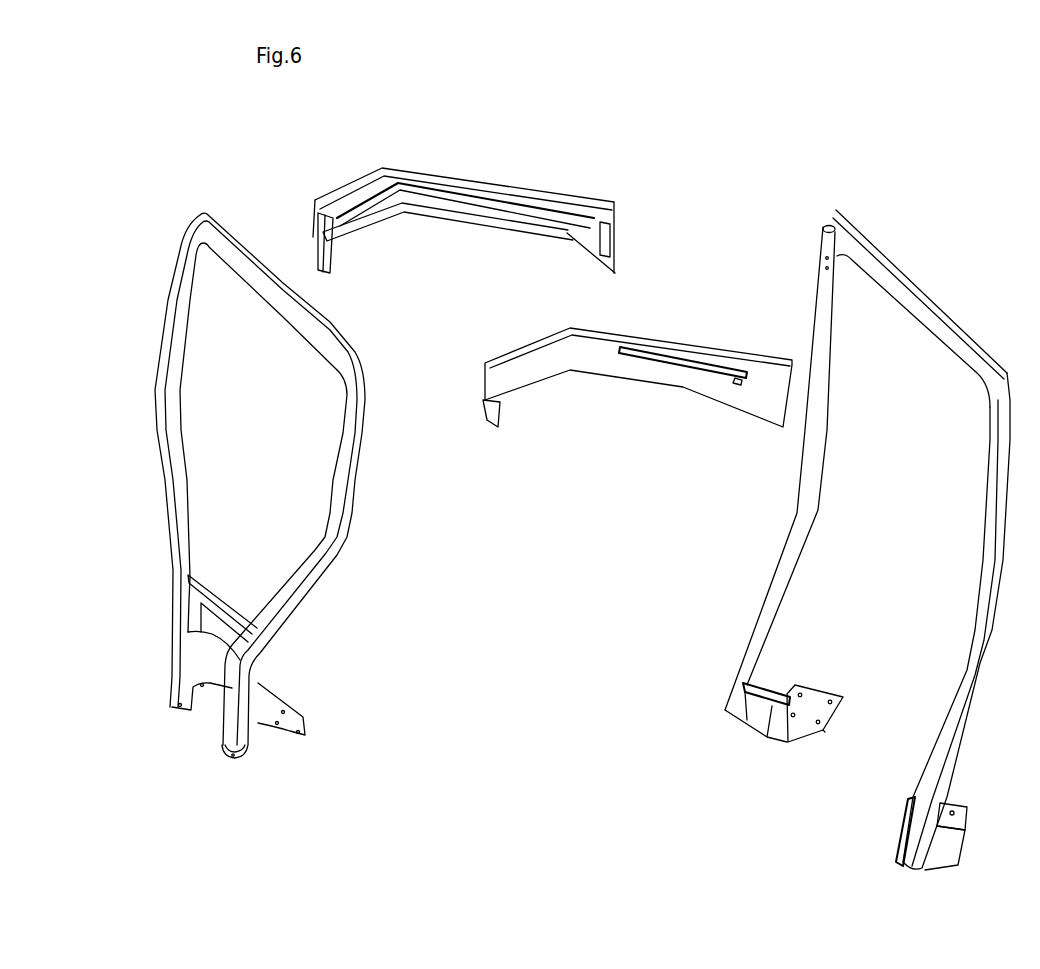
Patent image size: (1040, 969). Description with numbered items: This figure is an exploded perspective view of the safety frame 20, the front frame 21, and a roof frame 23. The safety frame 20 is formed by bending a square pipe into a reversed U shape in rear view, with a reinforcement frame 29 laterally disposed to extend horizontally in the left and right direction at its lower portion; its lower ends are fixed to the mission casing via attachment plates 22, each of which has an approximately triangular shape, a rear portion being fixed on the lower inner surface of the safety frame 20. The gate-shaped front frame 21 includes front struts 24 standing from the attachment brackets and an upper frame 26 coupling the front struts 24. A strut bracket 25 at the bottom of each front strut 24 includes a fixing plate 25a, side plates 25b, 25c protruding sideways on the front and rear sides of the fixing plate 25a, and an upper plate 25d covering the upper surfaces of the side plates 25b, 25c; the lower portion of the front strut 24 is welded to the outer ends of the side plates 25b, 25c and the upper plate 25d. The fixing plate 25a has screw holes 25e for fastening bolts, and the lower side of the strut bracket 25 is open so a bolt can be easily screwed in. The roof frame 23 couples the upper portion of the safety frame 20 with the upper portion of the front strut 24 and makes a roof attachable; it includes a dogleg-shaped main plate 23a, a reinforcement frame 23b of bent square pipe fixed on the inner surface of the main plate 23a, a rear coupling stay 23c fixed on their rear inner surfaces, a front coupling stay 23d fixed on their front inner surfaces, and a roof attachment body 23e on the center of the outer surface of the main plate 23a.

The safety frame 20 is at (343, 532).
The front frame 21 is at (803, 238).
The attachment plate 22 is at (297, 713).
The roof frame 23 is at (552, 324).
The main plate 23a is at (478, 180).
The reinforcement frame 23b is at (499, 213).
The rear coupling stay 23c is at (333, 262).
The front coupling stay 23d is at (600, 250).
The roof attachment body 23e is at (692, 373).
The front strut 24 is at (790, 558).
The strut bracket 25 is at (845, 598).
The fixing plate 25a is at (827, 693).
The side plate 25b is at (940, 855).
The side plate 25c is at (767, 710).
The upper plate 25d is at (777, 687).
The screw hole 25e is at (817, 723).
The upper frame 26 is at (952, 338).
The reinforcement frame 29 is at (223, 597).